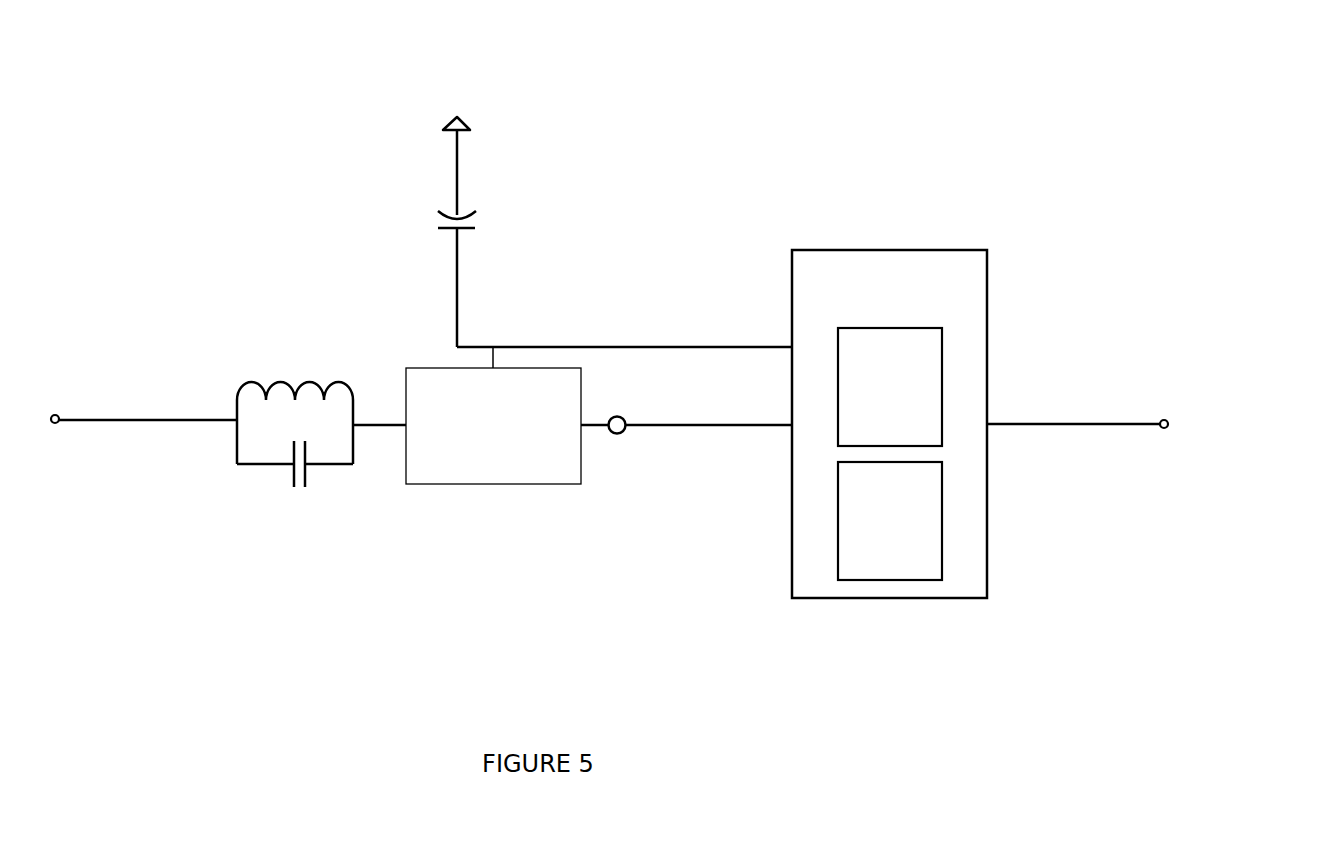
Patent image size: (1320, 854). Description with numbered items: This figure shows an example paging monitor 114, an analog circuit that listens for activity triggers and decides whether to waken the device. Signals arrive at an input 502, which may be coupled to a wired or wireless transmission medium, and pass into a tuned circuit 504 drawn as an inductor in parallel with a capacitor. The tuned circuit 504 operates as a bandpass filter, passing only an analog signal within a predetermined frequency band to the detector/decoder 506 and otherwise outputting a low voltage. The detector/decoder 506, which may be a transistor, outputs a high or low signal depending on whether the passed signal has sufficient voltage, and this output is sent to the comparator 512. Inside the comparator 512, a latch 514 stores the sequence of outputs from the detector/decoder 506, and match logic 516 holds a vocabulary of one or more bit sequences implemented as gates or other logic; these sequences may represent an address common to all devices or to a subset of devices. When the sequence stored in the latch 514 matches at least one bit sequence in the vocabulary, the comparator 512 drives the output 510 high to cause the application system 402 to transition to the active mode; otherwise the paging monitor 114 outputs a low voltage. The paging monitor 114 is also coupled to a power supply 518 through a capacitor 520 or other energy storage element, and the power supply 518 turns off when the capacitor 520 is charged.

The paging monitor 114 is at (361, 36).
The input 502 is at (60, 402).
The tuned circuit 504 is at (315, 375).
The detector/decoder 506 is at (473, 466).
The output 510 is at (1075, 415).
The comparator 512 is at (870, 312).
The latch 514 is at (870, 412).
The match logic 516 is at (870, 560).
The power supply 518 is at (480, 113).
The capacitor 520 is at (480, 222).
The application system 402 is at (1250, 411).